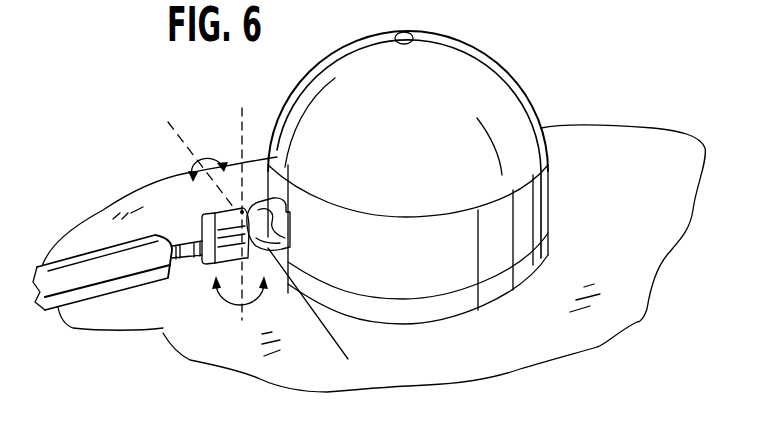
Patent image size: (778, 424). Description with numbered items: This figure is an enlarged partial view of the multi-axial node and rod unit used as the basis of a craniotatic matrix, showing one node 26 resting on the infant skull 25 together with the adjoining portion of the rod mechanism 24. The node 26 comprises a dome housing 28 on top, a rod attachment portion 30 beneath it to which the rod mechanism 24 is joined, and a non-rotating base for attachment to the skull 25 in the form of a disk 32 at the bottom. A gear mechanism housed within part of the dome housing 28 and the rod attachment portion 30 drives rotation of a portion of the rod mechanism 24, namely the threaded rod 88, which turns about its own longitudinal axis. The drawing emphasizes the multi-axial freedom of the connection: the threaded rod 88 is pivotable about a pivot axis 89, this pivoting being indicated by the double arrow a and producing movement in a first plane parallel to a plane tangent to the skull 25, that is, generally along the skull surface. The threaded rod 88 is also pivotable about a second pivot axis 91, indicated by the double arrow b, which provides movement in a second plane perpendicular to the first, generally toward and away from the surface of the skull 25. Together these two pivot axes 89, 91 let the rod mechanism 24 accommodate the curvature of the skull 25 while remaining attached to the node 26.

The rod mechanism 24 is at (130, 310).
The infant skull 25 is at (617, 233).
The node 26 is at (537, 121).
The dome housing 28 is at (470, 100).
The rod attachment portion 30 is at (543, 195).
The disk 32 is at (500, 296).
The threaded rod 88 is at (187, 258).
The pivot axis 89 is at (242, 112).
The pivot axis 91 is at (170, 137).
The double arrow a is at (256, 303).
The double arrow b is at (193, 172).